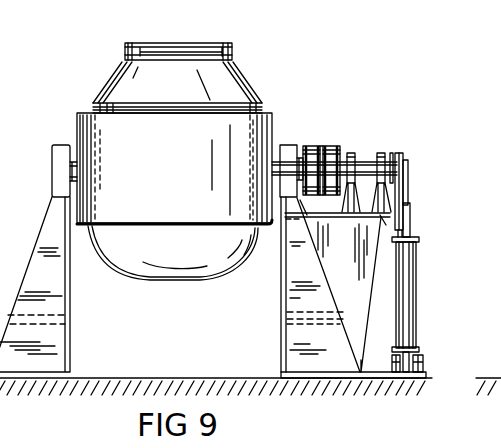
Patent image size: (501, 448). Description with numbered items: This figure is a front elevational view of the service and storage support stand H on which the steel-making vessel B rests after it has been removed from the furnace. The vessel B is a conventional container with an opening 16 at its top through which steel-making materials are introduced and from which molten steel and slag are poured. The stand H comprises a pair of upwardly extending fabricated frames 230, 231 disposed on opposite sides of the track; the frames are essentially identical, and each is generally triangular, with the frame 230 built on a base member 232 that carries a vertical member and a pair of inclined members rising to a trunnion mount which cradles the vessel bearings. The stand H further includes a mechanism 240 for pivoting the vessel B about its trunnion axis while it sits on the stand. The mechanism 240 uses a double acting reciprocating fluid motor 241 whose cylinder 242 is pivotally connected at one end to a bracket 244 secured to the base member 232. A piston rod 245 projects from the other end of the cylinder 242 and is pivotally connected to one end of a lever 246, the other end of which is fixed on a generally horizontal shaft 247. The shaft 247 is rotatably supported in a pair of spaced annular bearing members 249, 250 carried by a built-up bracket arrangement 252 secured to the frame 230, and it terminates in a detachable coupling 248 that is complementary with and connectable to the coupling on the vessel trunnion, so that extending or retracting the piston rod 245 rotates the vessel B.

The opening 16 is at (194, 43).
The steel-making vessel B is at (253, 90).
The support stand H is at (415, 72).
The detachable coupling 248 is at (322, 147).
The annular bearing member 249 is at (351, 153).
The annular bearing member 250 is at (383, 152).
The shaft 247 is at (399, 153).
The lever 246 is at (408, 183).
The mechanism 240 is at (437, 205).
The piston rod 245 is at (413, 238).
The built-up bracket arrangement 252 is at (375, 259).
The fluid motor 241 is at (418, 294).
The cylinder 242 is at (416, 325).
The bracket 244 is at (419, 357).
The support frame 230 is at (282, 307).
The support frame 231 is at (71, 322).
The base member 232 is at (293, 378).